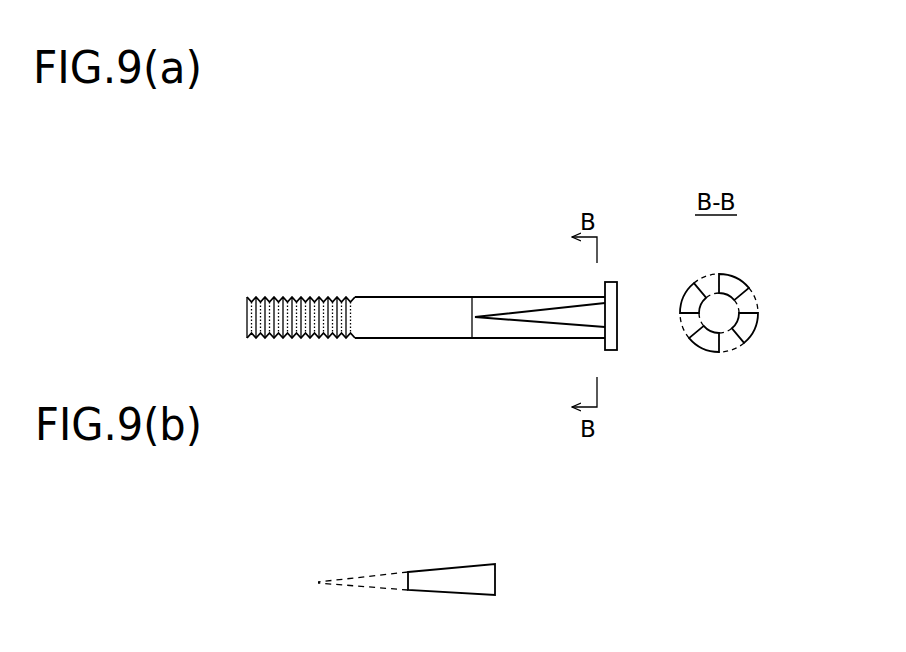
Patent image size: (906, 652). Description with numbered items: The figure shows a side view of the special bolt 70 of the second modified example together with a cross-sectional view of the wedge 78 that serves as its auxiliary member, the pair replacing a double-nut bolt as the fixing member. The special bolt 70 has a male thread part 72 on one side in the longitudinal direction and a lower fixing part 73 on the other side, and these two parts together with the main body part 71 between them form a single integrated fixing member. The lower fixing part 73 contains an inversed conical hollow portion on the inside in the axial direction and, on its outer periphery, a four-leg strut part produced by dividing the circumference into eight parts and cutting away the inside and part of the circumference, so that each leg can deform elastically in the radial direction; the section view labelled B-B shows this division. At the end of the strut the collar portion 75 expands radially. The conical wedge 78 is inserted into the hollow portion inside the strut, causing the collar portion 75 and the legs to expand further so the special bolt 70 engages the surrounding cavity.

In FIG. 9A, the special bolt 70 is at (416, 233).
In FIG. 9A, the main body part 71 is at (378, 298).
In FIG. 9A, the male thread part 72 is at (277, 296).
In FIG. 9A, the lower fixing part 73 is at (492, 275).
In FIG. 9A, the collar portion 75 is at (608, 282).
In FIG. 9B, the wedge 78 is at (485, 578).